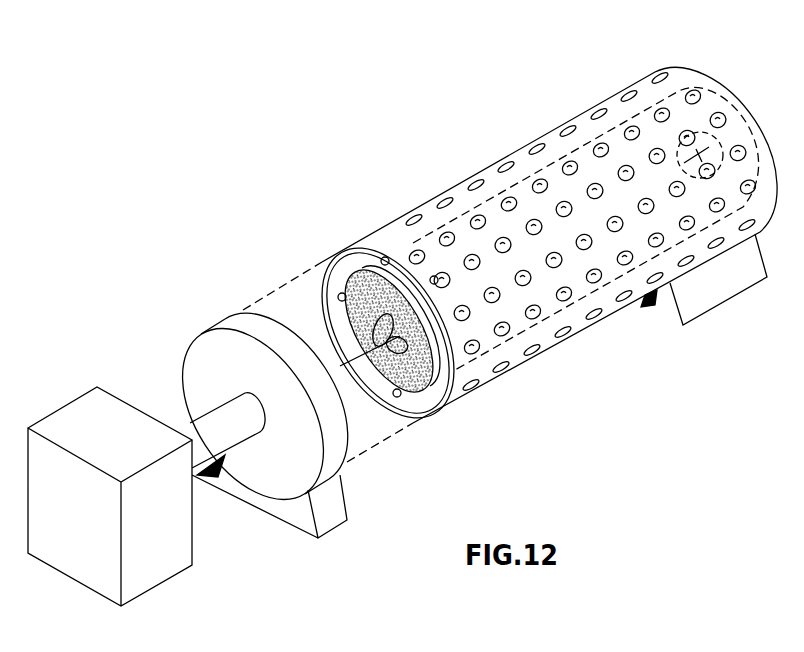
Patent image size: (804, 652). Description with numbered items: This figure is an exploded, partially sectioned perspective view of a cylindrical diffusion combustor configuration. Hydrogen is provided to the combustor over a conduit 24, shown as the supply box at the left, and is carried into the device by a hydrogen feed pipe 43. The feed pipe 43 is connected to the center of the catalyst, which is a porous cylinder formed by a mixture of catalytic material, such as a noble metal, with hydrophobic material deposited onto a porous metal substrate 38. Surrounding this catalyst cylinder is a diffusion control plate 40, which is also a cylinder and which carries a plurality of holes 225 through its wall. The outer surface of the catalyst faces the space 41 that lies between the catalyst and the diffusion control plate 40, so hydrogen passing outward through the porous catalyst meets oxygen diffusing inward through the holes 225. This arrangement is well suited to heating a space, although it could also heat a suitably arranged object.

The conduit 24 is at (158, 567).
The hydrogen feed pipe 43 is at (242, 412).
The catalyst substrate 38 is at (342, 320).
The diffusion control plate 40 is at (320, 266).
The space 41 is at (418, 400).
The holes 225 is at (692, 88).